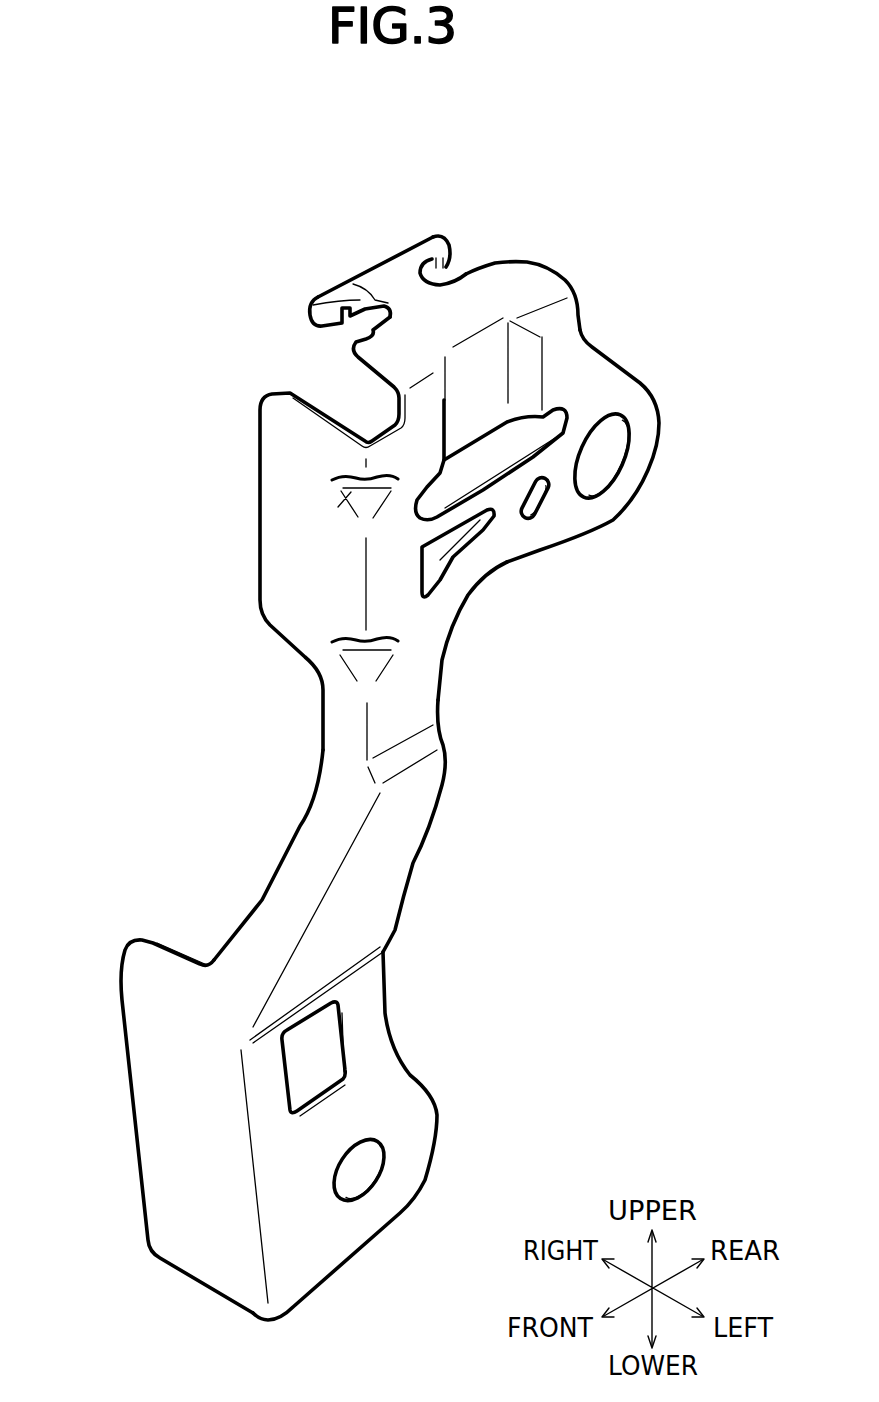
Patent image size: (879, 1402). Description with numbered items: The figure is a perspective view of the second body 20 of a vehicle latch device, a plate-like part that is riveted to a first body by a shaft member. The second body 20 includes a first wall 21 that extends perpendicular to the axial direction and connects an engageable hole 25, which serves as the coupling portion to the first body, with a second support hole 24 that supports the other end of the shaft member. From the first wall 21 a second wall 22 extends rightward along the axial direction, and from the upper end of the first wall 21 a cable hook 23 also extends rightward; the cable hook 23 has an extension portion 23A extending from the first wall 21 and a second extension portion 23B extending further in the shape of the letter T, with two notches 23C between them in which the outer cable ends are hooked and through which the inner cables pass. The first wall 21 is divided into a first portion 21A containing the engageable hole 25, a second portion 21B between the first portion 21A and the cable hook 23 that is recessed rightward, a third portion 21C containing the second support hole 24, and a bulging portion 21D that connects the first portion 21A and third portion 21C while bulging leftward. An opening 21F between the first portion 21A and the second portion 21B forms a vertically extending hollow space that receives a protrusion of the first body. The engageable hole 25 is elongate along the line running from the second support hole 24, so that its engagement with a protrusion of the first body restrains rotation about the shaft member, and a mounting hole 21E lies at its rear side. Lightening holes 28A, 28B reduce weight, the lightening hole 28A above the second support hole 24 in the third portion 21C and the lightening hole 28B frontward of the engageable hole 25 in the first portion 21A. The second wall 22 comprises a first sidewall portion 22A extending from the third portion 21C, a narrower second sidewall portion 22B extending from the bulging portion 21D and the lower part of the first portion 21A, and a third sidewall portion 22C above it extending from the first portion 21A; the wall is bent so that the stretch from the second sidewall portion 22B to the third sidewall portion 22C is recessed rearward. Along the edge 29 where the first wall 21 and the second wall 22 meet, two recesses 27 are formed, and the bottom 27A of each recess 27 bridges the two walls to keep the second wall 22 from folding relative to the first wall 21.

The second body 20 is at (126, 285).
The first wall 21 is at (429, 700).
The first portion 21A is at (470, 577).
The second portion 21B is at (482, 363).
The third portion 21C is at (380, 1088).
The bulging portion 21D is at (393, 863).
The mounting hole 21E is at (617, 477).
The opening 21F is at (518, 440).
The second wall 22 is at (300, 853).
The first sidewall portion 22A is at (157, 1102).
The second sidewall portion 22B is at (273, 902).
The third sidewall portion 22C is at (287, 510).
The cable hook 23 is at (531, 279).
The extension portion 23A is at (455, 312).
The second extension portion 23B is at (388, 268).
The notches 23C is at (431, 238).
The second support hole 24 is at (375, 1170).
The engageable hole 25 is at (540, 513).
The recesses 27 is at (345, 483).
The bottom 27A is at (357, 684).
The lightening hole 28A is at (338, 1022).
The lightening hole 28B is at (470, 543).
The edge 29 is at (367, 730).